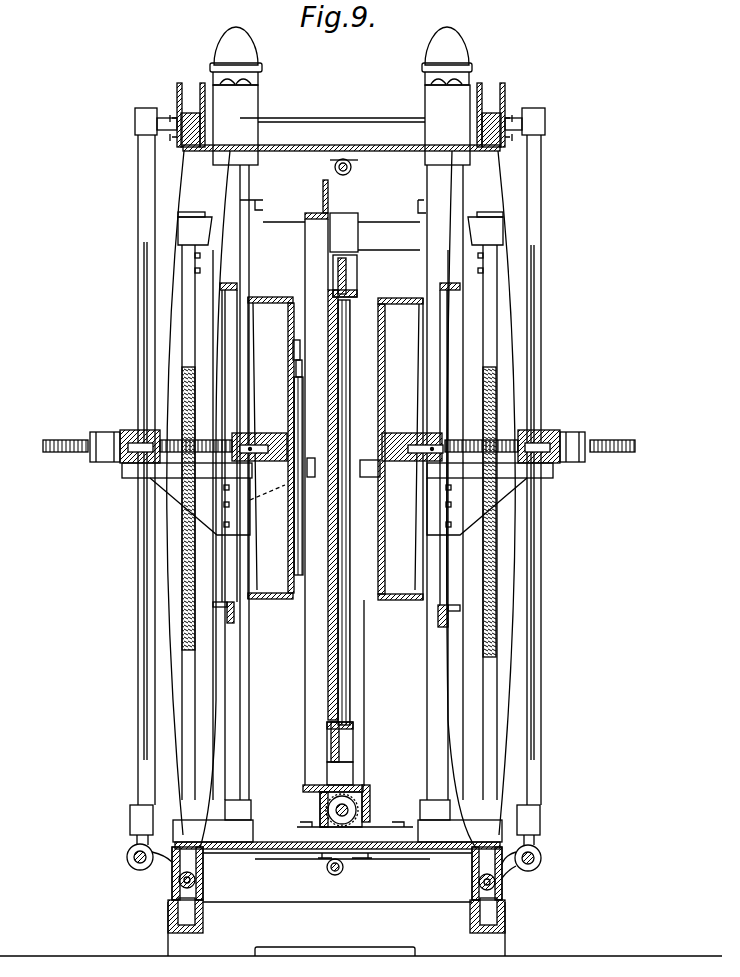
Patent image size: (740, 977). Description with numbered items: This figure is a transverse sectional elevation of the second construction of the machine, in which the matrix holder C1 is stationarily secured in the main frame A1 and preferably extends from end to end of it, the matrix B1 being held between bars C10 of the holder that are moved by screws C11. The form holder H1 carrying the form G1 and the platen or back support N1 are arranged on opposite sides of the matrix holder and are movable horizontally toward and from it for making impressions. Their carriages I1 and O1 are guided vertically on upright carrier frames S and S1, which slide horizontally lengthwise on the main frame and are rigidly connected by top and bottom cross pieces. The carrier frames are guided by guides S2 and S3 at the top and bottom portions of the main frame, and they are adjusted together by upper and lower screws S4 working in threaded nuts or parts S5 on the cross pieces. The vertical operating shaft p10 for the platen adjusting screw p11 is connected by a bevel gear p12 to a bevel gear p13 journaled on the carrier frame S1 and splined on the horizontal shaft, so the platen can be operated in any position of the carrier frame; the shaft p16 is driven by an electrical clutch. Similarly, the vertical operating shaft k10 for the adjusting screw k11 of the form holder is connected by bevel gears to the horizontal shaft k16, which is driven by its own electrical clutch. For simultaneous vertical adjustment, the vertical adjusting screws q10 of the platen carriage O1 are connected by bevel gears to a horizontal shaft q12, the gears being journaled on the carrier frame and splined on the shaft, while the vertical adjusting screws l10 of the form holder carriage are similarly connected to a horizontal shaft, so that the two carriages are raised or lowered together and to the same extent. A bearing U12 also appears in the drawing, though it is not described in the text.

The main frame A1 is at (318, 940).
The guide S3 is at (170, 906).
The rock shaft bearing U12 is at (198, 871).
The horizontal shaft q12 is at (478, 881).
The carrier frame S1 is at (460, 678).
The threaded nut S5 is at (346, 862).
The adjusting screw S4 is at (335, 168).
The guide S2 is at (190, 112).
The carrier frame S is at (368, 151).
The vertical operating shaft k10 is at (143, 588).
The vertical operating shaft p10 is at (536, 548).
The bevel gear p12 is at (538, 848).
The horizontal shaft k16 is at (133, 866).
The shaft p16 is at (544, 856).
The bevel gear p13 is at (538, 876).
The vertical adjusting screw l10 is at (180, 303).
The vertical adjusting screw q10 is at (489, 333).
The form holder H1 is at (279, 292).
The form G1 is at (294, 414).
The platen N1 is at (383, 552).
The carriage I1 is at (238, 618).
The carriage O1 is at (440, 622).
The adjusting screw k11 is at (66, 453).
The platen adjusting screw p11 is at (613, 437).
The matrix holder C1 is at (329, 190).
The matrix B1 is at (327, 678).
The screw C11 is at (351, 654).
The bar C10 is at (348, 278).